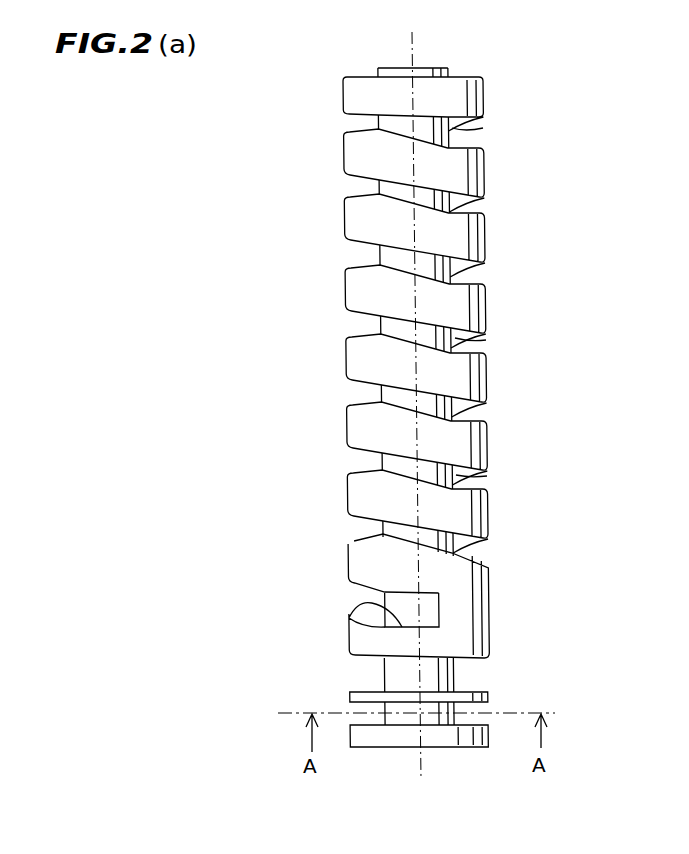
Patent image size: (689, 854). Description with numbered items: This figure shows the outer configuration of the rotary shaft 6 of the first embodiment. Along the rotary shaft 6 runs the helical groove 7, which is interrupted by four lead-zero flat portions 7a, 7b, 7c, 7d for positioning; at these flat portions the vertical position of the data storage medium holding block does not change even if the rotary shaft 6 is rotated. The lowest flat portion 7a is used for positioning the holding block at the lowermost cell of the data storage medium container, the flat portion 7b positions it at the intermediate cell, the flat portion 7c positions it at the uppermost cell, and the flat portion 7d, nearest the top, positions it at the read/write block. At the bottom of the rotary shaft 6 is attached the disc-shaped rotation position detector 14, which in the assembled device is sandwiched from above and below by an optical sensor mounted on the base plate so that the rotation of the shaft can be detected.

The rotary shaft 6 is at (343, 302).
The helical groove 7 is at (357, 136).
The flat portion 7a is at (347, 615).
The flat portion 7b is at (472, 477).
The flat portion 7c is at (471, 339).
The flat portion 7d is at (475, 130).
The rotation position detector 14 is at (481, 692).